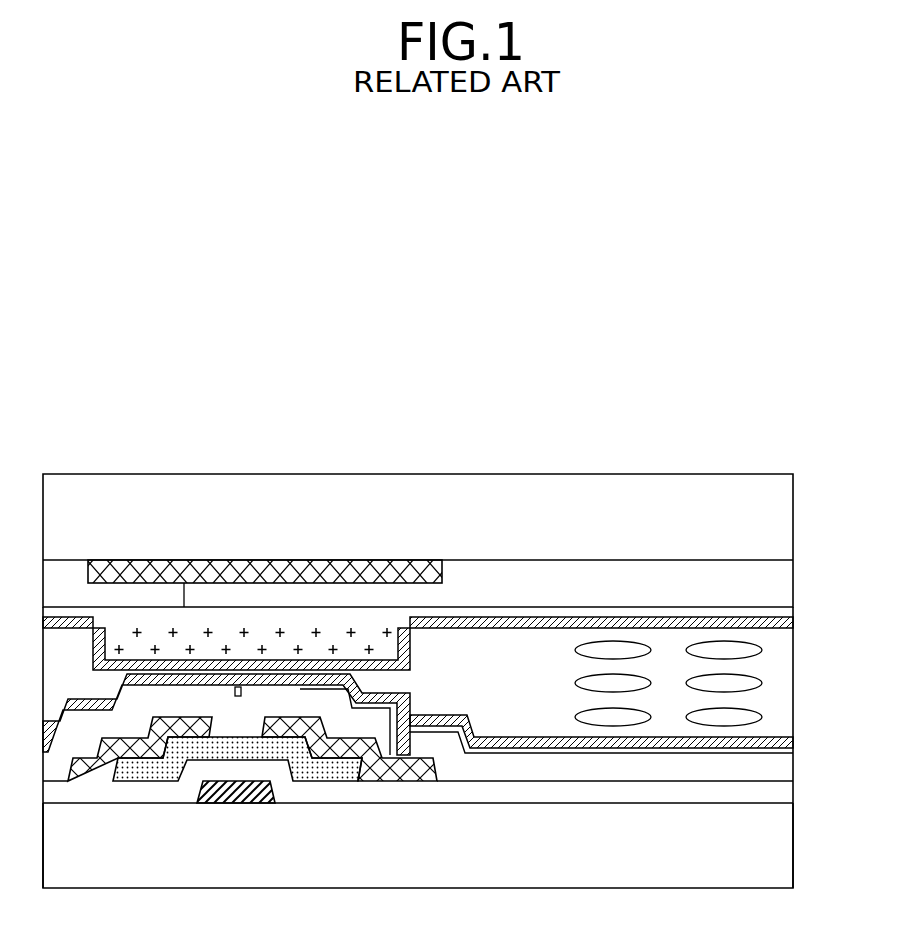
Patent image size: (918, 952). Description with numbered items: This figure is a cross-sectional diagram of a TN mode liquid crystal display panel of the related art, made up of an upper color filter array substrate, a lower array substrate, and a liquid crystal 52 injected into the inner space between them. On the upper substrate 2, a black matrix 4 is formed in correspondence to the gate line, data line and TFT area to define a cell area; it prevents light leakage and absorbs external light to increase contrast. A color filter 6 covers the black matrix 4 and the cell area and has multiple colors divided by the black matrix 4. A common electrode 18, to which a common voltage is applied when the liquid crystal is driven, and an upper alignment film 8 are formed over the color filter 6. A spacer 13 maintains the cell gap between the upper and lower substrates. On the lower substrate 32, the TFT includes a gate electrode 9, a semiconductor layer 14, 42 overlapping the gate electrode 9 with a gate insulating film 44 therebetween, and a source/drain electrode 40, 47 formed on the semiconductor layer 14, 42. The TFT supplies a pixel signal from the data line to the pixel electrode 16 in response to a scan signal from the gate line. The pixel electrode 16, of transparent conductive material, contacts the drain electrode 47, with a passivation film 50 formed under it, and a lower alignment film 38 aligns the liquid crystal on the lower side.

The upper substrate 2 is at (793, 522).
The color filter 6 is at (793, 575).
The black matrix 4 is at (234, 560).
The upper alignment film 8 is at (793, 628).
The common electrode 18 is at (793, 612).
The spacer 13 is at (403, 645).
The liquid crystal 52 is at (752, 685).
The drain electrode 47 is at (377, 778).
The lower alignment film 38 is at (793, 737).
The pixel electrode 16 is at (793, 750).
The source electrode 40 is at (92, 782).
The semiconductor layer 42 is at (317, 782).
The semiconductor layer 14 is at (162, 782).
The passivation film 50 is at (793, 768).
The gate insulating film 44 is at (478, 793).
The gate electrode 9 is at (237, 790).
The lower substrate 32 is at (793, 826).